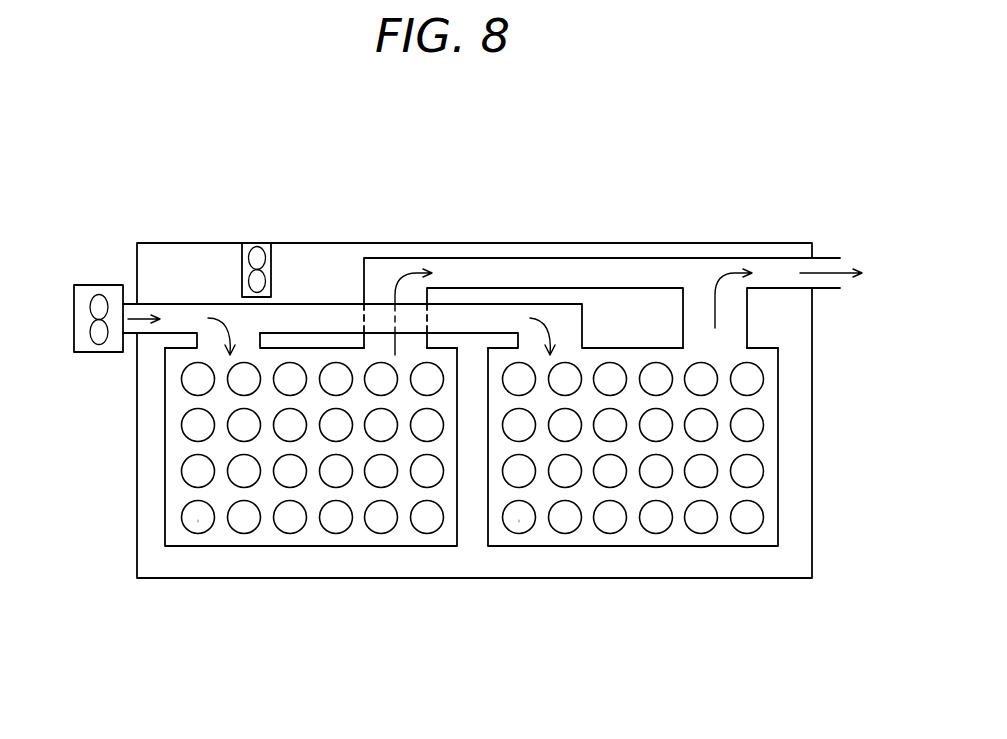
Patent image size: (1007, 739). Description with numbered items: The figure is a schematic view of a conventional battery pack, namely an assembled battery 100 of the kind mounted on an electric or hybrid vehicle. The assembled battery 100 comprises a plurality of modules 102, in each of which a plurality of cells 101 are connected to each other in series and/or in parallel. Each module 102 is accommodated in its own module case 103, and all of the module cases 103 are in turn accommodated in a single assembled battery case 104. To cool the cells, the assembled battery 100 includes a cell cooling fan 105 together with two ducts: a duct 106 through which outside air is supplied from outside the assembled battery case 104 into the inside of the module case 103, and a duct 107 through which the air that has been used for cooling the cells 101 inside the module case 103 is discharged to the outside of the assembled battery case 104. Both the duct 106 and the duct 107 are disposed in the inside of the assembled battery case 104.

The assembled battery 100 is at (680, 190).
The cell 101 is at (245, 518).
The module 102 is at (312, 528).
The module case 103 is at (365, 546).
The assembled battery case 104 is at (468, 578).
The cell cooling fan 105 is at (93, 352).
The duct 106 is at (317, 304).
The duct 107 is at (480, 243).